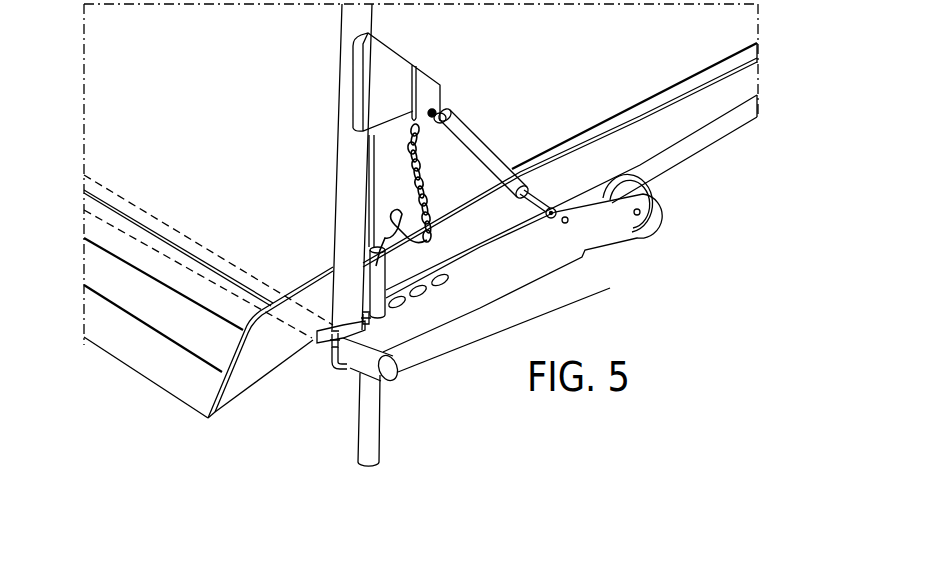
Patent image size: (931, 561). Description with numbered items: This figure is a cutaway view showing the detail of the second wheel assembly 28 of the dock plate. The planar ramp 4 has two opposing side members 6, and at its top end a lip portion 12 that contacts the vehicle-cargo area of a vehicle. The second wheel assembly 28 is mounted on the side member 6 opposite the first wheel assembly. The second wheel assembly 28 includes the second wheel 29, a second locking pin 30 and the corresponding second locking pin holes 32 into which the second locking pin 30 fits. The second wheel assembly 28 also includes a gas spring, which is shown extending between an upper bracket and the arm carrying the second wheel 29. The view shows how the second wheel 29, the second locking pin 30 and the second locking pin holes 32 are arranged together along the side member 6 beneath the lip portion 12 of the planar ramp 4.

The planar ramp 4 is at (638, 54).
The side member 6 is at (675, 117).
The lip portion 12 is at (193, 363).
The second wheel assembly 28 is at (573, 245).
The second wheel 29 is at (642, 189).
The second locking pin 30 is at (379, 413).
The second locking pin holes 32 is at (398, 304).